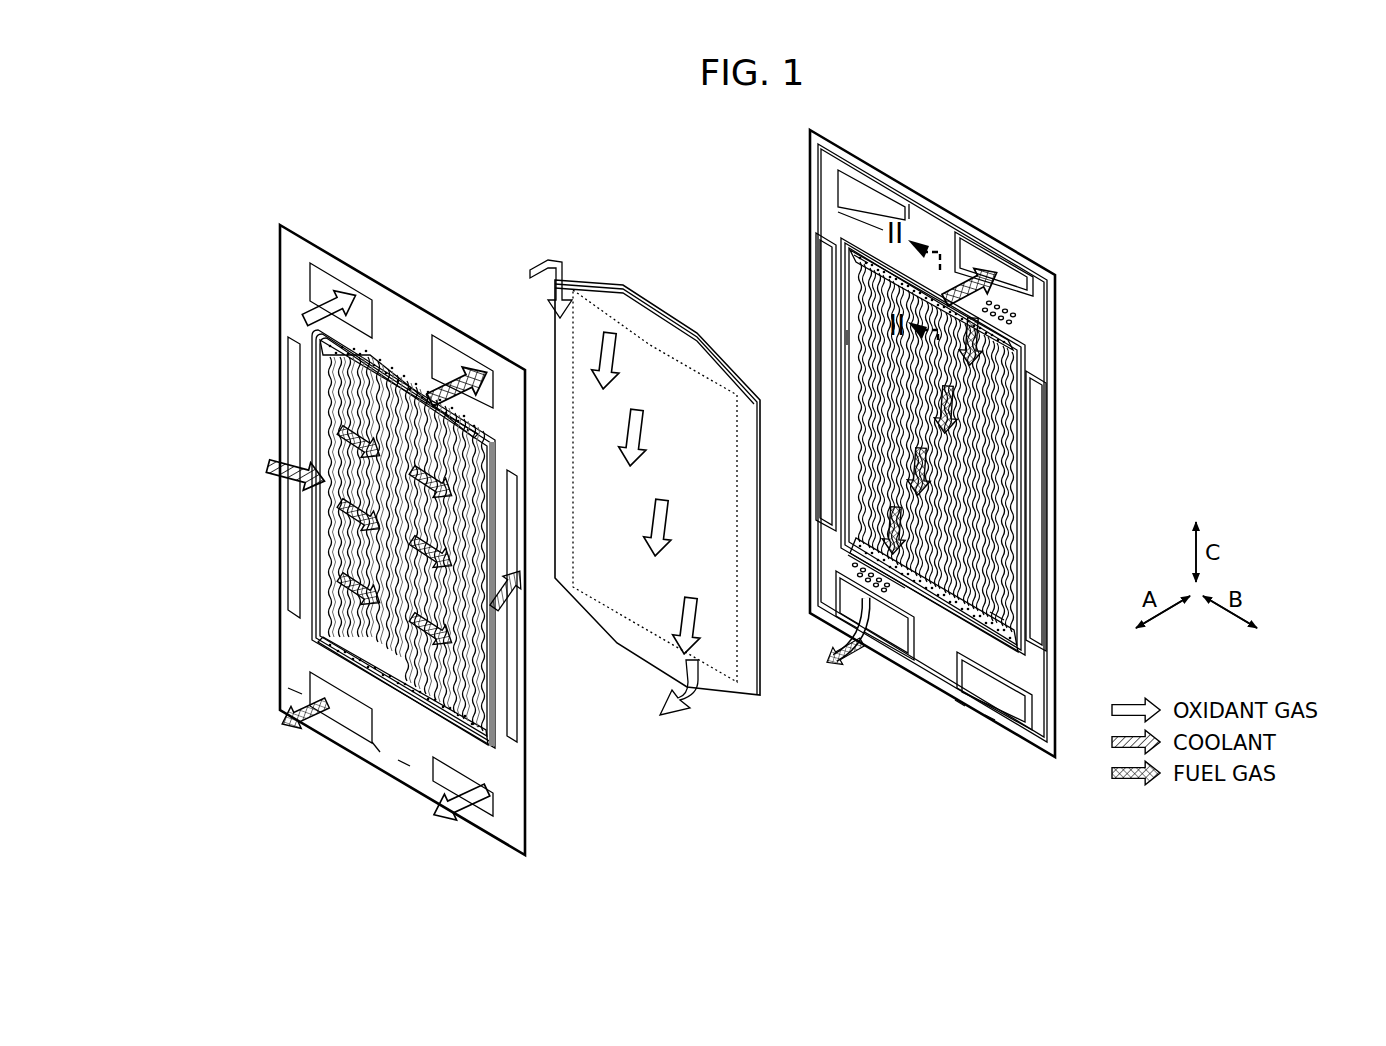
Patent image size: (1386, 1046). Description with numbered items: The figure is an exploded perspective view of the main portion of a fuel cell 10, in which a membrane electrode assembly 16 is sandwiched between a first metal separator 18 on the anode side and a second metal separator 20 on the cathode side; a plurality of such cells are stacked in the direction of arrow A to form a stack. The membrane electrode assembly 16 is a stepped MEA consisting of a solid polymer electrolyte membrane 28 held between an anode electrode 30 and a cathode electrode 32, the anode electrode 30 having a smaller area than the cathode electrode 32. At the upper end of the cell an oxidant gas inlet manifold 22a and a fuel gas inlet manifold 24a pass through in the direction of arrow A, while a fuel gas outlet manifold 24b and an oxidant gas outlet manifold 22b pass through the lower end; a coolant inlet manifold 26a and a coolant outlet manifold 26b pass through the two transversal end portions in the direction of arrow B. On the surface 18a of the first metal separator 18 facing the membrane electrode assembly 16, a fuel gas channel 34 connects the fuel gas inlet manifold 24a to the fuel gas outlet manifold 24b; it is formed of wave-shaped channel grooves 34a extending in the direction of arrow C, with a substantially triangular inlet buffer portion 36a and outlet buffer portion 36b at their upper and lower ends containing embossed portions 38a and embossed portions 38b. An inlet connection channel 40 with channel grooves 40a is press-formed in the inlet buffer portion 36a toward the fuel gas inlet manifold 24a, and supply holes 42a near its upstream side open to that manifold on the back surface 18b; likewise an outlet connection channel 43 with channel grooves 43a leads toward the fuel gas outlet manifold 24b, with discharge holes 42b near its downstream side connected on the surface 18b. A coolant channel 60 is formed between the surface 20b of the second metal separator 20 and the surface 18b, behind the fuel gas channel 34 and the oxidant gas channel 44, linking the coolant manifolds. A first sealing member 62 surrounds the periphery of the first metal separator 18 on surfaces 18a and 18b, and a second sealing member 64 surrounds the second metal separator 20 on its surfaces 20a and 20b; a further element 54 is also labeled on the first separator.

The fuel cell 10 is at (703, 119).
The membrane electrode assembly 16 is at (628, 461).
The first metal separator 18 is at (901, 454).
The surface of the first metal separator 18a is at (952, 700).
The surface of the first metal separator 18b is at (988, 712).
The second metal separator 20 is at (282, 227).
The surface of the second metal separator 20a is at (406, 765).
The surface of the second metal separator 20b is at (380, 758).
The oxidant gas inlet manifold 22a is at (325, 290).
The oxidant gas outlet manifold 22b is at (498, 796).
The fuel gas inlet manifold 24a is at (450, 348).
The fuel gas outlet manifold 24b is at (318, 690).
The coolant inlet manifold 26a is at (292, 546).
The coolant outlet manifold 26b is at (516, 700).
The solid polymer electrolyte membrane 28 is at (657, 486).
The anode electrode 30 is at (657, 486).
The cathode electrode 32 is at (668, 325).
The fuel gas channel 34 is at (942, 446).
The wave-shaped channel grooves 34a is at (1000, 528).
The inlet buffer portion 36a is at (1000, 300).
The outlet buffer portion 36b is at (928, 602).
The embossed portions 38a is at (860, 264).
The embossed portions 38b is at (1002, 600).
The inlet connection channel 40 is at (1068, 320).
The channel grooves 40a is at (1068, 303).
The supply holes 42a is at (1006, 308).
The discharge holes 42b is at (887, 598).
The outlet connection channel 43 is at (836, 628).
The channel grooves 43a is at (846, 628).
The oxidant gas channel 44 is at (362, 437).
The seal member 54 is at (842, 335).
The coolant channel 60 is at (381, 539).
The first sealing member 62 is at (1036, 752).
The second sealing member 64 is at (332, 748).